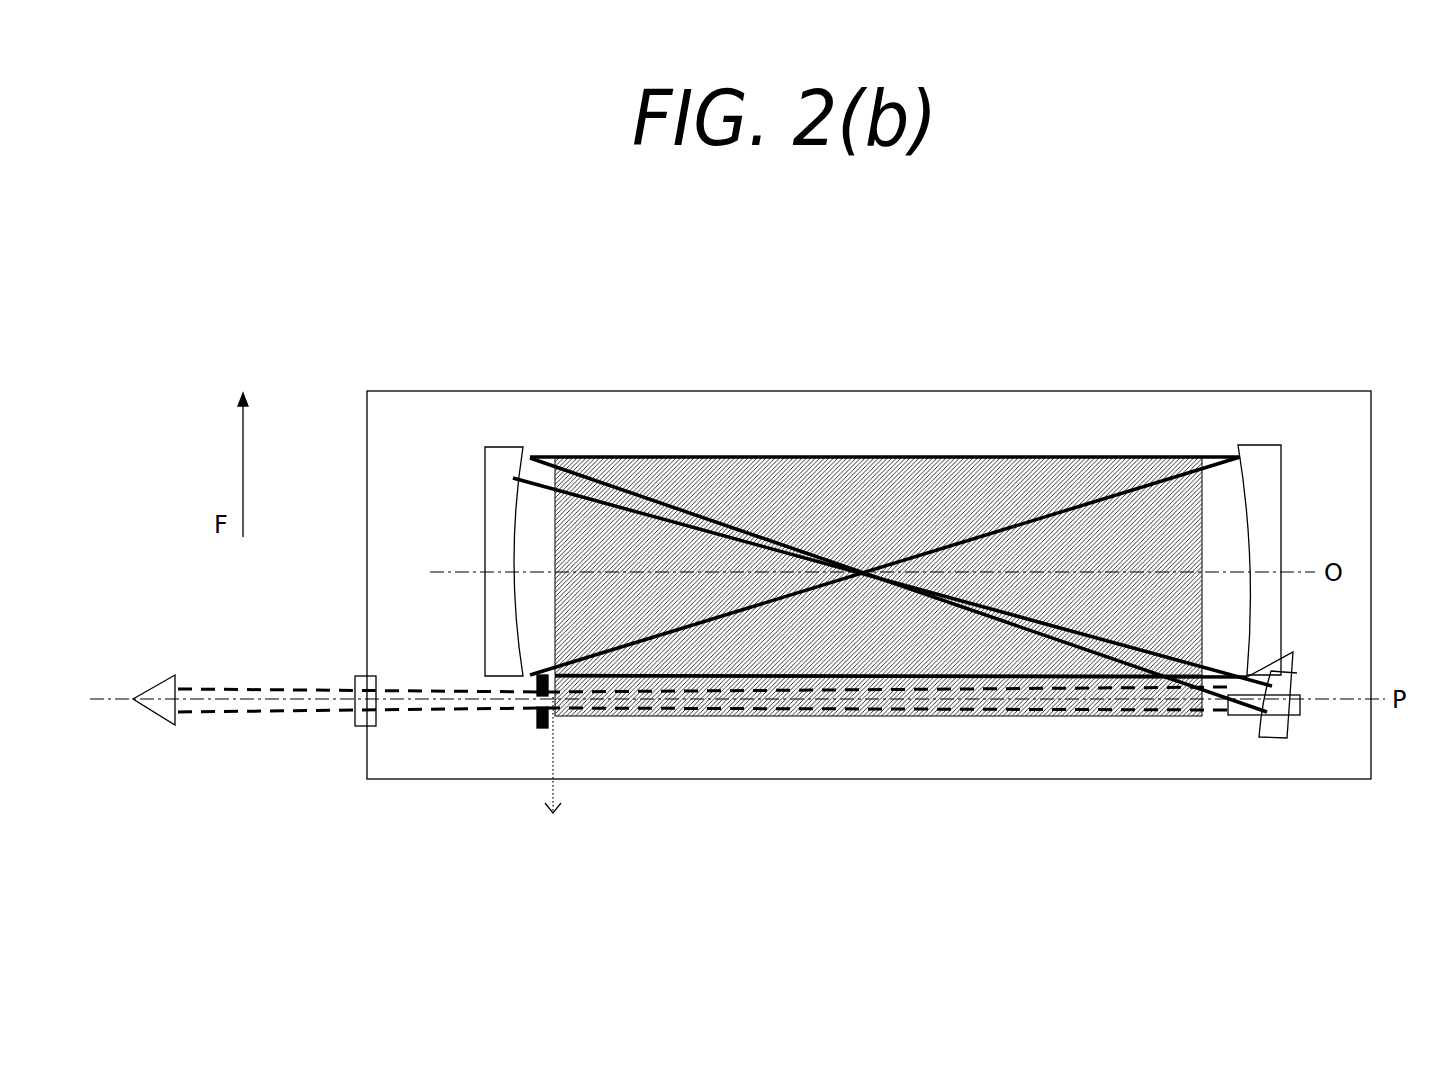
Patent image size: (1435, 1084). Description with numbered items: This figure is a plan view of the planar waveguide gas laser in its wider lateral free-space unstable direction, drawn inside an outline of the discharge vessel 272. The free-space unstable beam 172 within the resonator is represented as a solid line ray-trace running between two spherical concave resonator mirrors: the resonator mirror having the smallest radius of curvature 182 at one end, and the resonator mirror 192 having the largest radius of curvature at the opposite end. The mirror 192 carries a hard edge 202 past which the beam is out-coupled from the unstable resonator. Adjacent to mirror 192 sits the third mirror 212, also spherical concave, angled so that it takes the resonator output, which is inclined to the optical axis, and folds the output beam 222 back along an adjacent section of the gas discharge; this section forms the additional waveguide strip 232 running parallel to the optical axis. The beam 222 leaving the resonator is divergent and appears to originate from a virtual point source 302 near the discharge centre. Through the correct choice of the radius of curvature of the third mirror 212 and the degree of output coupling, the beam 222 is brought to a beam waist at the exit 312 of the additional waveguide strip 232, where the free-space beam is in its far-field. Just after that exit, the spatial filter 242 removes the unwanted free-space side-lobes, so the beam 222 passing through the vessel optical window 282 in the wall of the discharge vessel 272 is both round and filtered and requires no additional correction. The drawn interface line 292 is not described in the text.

The resonator free space beam 172 is at (735, 457).
The discharge vessel 272 is at (1203, 390).
The resonator mirror having the smallest radius of curvature 182 is at (485, 482).
The resonator mirror 192 is at (1281, 478).
The virtual point source 302 is at (863, 572).
The hard edge 202 is at (1292, 665).
The third mirror 212 is at (1293, 735).
The output beam 222 is at (232, 685).
The vessel optical window 282 is at (358, 717).
The spatial filter 242 is at (533, 722).
The exit of the additional waveguide strip 312 is at (554, 773).
The additional waveguide strip 232 is at (785, 680).
The interface layer 292 is at (1090, 657).